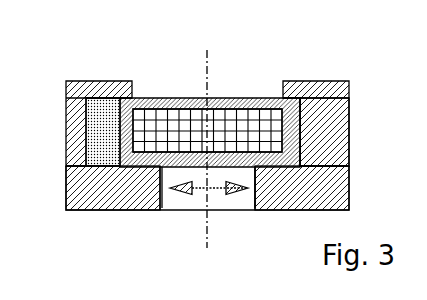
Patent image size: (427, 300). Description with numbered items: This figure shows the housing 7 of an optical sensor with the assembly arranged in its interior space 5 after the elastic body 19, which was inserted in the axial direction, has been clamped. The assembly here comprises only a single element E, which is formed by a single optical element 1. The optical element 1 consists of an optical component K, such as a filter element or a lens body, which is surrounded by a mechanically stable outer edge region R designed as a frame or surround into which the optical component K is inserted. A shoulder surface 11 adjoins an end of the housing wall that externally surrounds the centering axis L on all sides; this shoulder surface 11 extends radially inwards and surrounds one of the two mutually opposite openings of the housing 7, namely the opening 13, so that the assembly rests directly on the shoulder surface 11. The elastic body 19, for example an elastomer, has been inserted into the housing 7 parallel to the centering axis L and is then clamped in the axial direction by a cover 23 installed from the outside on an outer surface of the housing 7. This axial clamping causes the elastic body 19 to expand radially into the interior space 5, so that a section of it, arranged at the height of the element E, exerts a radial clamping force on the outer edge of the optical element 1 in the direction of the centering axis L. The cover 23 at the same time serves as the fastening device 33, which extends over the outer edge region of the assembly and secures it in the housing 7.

The optical element 1 is at (210, 101).
The element E is at (214, 97).
The optical component K is at (234, 113).
The centering axis L is at (206, 68).
The edge region R is at (301, 96).
The interior space 5 is at (322, 100).
The housing 7 is at (320, 150).
The shoulder surface 11 is at (105, 207).
The opening 13 is at (205, 188).
The elastic body 19 is at (103, 142).
The cover 23 is at (78, 104).
The fastening device 33 is at (103, 92).